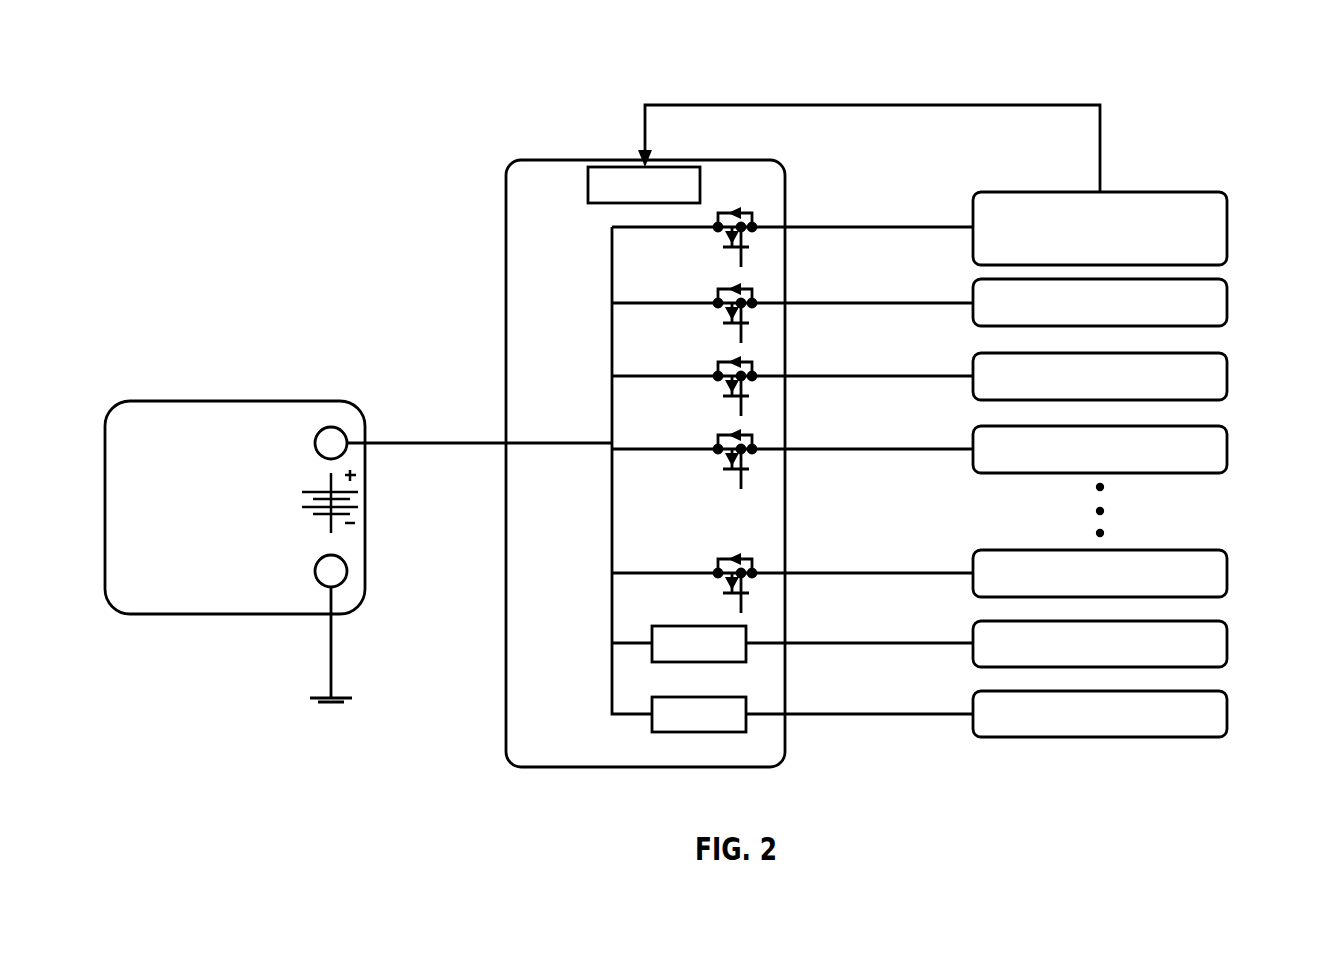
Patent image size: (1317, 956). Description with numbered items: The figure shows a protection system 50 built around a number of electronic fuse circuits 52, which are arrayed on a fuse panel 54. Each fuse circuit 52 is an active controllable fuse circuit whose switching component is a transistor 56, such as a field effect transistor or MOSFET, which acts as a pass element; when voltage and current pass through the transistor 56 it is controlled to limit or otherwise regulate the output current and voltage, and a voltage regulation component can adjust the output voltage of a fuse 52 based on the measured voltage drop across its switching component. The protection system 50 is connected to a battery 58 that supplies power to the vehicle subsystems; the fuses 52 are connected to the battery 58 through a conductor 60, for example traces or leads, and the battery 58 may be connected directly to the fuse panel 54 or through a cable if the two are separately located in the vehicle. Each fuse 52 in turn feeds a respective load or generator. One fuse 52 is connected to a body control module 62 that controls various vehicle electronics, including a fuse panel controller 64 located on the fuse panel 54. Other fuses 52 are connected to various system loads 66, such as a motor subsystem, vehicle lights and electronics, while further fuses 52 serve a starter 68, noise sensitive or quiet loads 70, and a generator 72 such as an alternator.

The protection system 50 is at (403, 68).
The fuse circuit 52 is at (763, 315).
The fuse panel 54 is at (519, 265).
The transistor 56 is at (735, 213).
The battery 58 is at (168, 412).
The conductor 60 is at (610, 677).
The body control module 62 is at (1228, 228).
The fuse panel controller 64 is at (598, 173).
The system loads 66 is at (1228, 302).
The starter 68 is at (1228, 714).
The quiet loads 70 is at (1228, 376).
The generator 72 is at (1228, 643).